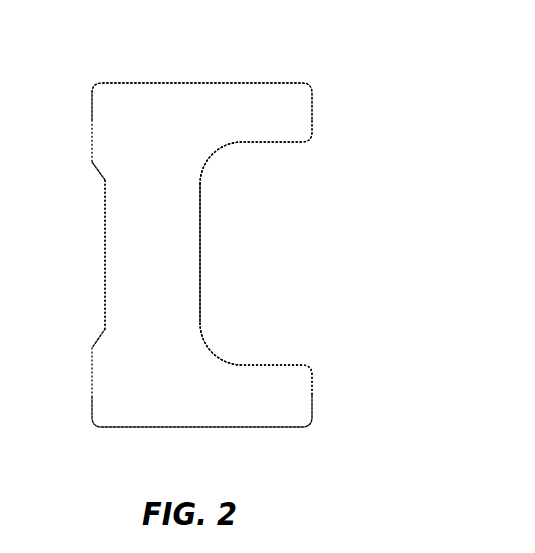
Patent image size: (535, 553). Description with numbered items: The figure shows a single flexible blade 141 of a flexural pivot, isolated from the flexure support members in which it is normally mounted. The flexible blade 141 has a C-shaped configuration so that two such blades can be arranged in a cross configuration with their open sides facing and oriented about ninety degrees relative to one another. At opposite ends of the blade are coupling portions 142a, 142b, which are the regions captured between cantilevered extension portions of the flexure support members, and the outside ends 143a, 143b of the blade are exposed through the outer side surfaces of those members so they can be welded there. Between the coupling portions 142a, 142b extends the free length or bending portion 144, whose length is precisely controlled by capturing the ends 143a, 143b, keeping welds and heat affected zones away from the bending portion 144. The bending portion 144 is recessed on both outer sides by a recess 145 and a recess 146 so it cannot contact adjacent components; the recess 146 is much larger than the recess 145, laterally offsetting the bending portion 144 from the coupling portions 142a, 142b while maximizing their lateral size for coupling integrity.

The flexible blade 141 is at (213, 42).
The coupling portion 142a is at (208, 103).
The coupling portion 142b is at (208, 402).
The end 143a is at (182, 83).
The end 143b is at (183, 427).
The bending portion 144 is at (142, 246).
The recess 145 is at (76, 300).
The recess 146 is at (248, 245).